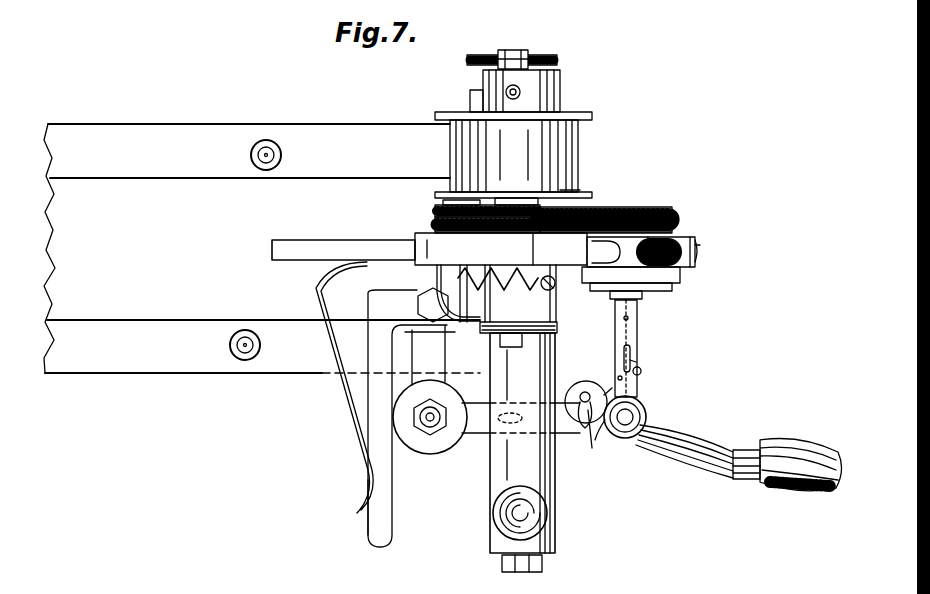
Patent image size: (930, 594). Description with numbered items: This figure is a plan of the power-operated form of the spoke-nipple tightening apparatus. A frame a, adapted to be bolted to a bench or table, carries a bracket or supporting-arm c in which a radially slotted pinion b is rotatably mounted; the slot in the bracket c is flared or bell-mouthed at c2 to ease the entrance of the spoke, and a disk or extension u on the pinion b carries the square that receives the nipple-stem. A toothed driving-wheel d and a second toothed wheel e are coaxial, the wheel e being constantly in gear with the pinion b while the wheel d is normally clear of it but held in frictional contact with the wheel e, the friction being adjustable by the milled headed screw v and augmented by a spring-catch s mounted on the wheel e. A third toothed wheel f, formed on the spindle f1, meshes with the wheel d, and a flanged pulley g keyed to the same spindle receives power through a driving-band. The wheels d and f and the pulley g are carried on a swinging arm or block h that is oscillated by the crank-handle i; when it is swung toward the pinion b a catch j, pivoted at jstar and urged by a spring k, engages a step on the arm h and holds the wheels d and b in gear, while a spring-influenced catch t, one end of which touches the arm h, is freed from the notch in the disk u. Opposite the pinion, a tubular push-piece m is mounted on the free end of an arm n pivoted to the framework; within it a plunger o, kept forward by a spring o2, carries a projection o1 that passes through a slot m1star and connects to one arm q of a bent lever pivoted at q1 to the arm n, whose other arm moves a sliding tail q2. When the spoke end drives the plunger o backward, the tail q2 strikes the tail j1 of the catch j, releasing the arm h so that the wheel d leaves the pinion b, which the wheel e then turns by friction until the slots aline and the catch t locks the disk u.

The frame a is at (262, 248).
The milled headed screw v is at (540, 58).
The swinging arm or block h is at (483, 92).
The flanged wheel or pulley g is at (513, 158).
The spring-catch s is at (452, 185).
The spindle f1 is at (560, 190).
The second driving or actuating toothed wheel e is at (438, 209).
The toothed driving-wheel d is at (435, 224).
The toothed wheel or pinion b is at (658, 207).
The third toothed wheel f is at (501, 249).
The bracket or supporting-arm c is at (639, 268).
The flaring or bell-mouthed portion c2 is at (721, 251).
The pivot of catch jstar is at (420, 298).
The catch j is at (407, 418).
The tail of catch j1 is at (382, 522).
The catch t is at (553, 288).
The spring k is at (340, 405).
The tail or projection q2 is at (431, 442).
The crank-handle i is at (542, 513).
The tubular push-piece m is at (630, 336).
The rod or plunger o is at (620, 318).
The projection o1 is at (629, 350).
The spring o2 is at (618, 376).
The slot m1star is at (636, 360).
The arm of bent lever q is at (641, 372).
The arm n is at (603, 410).
The pivot of bent lever q1 is at (602, 442).
The disk or extension u is at (739, 458).